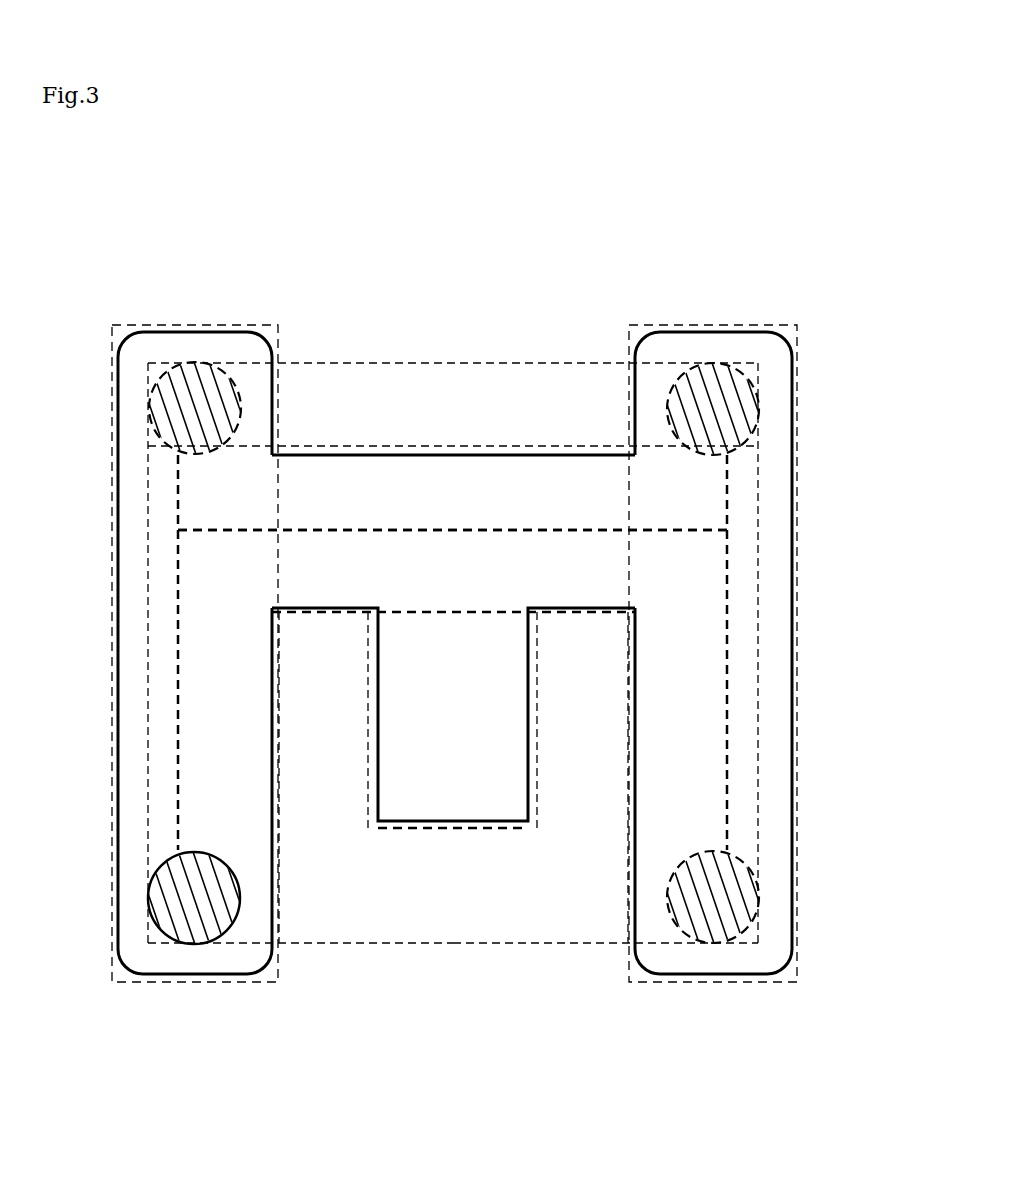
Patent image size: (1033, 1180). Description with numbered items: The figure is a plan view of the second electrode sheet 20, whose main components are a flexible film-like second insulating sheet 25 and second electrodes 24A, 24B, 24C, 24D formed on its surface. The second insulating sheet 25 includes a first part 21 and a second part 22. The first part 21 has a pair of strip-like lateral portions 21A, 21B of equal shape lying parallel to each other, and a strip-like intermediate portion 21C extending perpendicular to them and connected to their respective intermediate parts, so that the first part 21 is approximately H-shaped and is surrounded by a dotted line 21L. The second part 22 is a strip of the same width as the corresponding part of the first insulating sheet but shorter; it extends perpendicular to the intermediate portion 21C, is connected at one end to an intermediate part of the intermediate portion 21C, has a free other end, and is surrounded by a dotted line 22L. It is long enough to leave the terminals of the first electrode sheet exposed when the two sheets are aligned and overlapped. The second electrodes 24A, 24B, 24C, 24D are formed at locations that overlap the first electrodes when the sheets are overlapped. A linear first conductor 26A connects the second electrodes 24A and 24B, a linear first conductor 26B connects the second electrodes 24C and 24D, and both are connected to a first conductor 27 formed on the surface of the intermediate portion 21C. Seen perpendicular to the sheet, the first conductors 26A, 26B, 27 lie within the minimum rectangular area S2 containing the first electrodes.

The second electrode sheet 20 is at (684, 288).
The first part 21 is at (318, 453).
The lateral portion 21A is at (165, 578).
The lateral portion 21B is at (745, 585).
The intermediate portion 21C is at (370, 455).
The dotted line 21L is at (443, 445).
The second part 22 is at (513, 653).
The dotted line 22L is at (537, 808).
The second electrode 24A is at (195, 922).
The second electrode 24B is at (225, 385).
The second electrode 24C is at (710, 920).
The second electrode 24D is at (745, 395).
The second insulating sheet 25 is at (545, 453).
The first conductor 26A is at (178, 636).
The first conductor 26B is at (727, 637).
The first conductor 27 is at (468, 527).
The minimum rectangular area S2 is at (515, 355).